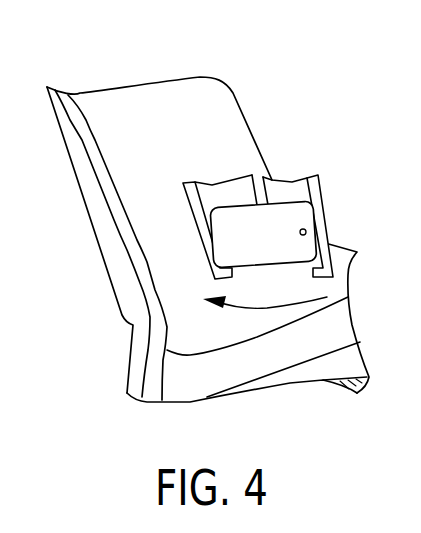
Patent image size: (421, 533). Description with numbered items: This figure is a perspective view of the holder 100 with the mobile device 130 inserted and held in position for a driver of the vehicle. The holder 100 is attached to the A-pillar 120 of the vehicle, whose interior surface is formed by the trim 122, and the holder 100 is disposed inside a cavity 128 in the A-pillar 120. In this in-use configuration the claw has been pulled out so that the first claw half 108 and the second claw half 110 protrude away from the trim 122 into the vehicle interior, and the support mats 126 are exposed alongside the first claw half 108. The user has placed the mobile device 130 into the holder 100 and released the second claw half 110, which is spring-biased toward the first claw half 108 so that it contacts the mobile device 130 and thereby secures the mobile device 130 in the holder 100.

The holder 100 is at (212, 212).
The first claw half 108 is at (235, 221).
The second claw half 110 is at (292, 187).
The A-pillar 120 is at (100, 210).
The trim 122 is at (115, 150).
The support mats 126 is at (207, 233).
The cavity 128 is at (178, 225).
The mobile device 130 is at (253, 262).